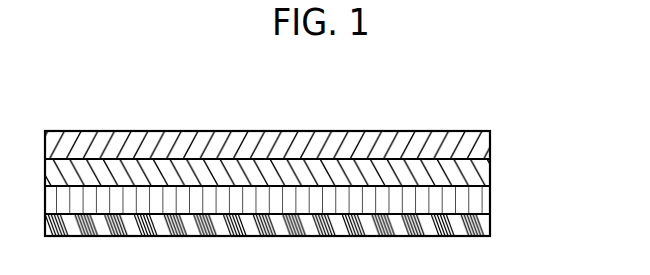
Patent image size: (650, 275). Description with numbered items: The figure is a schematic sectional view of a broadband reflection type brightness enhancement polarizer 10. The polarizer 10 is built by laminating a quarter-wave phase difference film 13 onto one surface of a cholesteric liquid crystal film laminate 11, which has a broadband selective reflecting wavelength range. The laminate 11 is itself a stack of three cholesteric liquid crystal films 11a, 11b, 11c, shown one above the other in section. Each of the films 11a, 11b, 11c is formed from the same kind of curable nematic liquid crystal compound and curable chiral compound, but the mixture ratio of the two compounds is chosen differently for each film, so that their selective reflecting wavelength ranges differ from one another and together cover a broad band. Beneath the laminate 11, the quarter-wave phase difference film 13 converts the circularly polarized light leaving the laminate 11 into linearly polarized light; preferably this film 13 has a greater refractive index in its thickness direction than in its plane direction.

The broadband reflection type brightness enhancement polarizer 10 is at (326, 146).
The cholesteric liquid crystal film laminate 11 is at (326, 172).
The cholesteric liquid crystal film 11a is at (479, 152).
The cholesteric liquid crystal film 11b is at (478, 173).
The cholesteric liquid crystal film 11c is at (477, 200).
The quarter-wave phase difference film 13 is at (478, 227).